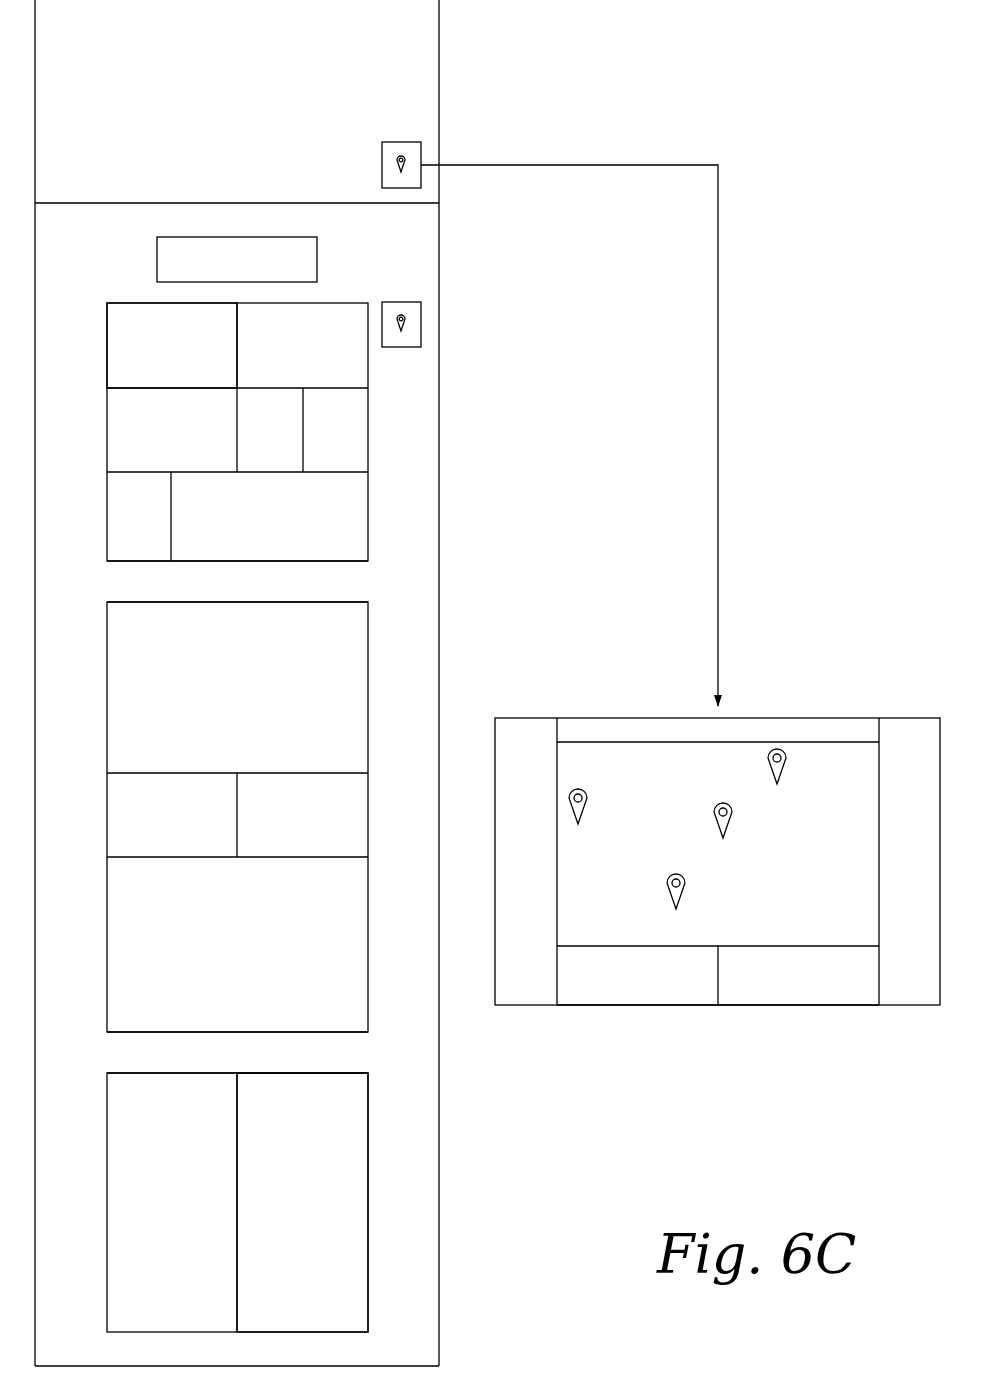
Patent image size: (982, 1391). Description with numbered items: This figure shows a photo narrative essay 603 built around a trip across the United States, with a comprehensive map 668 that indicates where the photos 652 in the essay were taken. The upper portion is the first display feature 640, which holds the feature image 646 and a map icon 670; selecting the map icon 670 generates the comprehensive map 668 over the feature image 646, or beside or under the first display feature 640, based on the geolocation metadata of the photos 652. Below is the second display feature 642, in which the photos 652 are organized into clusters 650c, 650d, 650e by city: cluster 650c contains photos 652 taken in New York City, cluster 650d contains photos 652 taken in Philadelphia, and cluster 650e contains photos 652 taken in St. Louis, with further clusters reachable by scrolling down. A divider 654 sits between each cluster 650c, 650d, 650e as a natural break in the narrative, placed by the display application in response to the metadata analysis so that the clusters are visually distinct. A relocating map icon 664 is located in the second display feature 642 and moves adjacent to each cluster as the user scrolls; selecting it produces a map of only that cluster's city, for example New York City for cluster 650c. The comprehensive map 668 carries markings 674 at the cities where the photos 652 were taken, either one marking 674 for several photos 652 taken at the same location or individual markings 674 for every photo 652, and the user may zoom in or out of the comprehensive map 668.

The photo narrative essay 603 is at (648, 30).
The first display feature 640 is at (284, 135).
The second display feature 642 is at (493, 784).
The feature image 646 is at (210, 92).
The cluster 650c is at (377, 432).
The cluster 650d is at (379, 700).
The cluster 650e is at (379, 1222).
The photo 652 is at (150, 360).
The divider 654 is at (375, 578).
The relocating map icon 664 is at (422, 310).
The comprehensive map 668 is at (580, 899).
The map icon 670 is at (422, 152).
The marking 674 is at (789, 758).